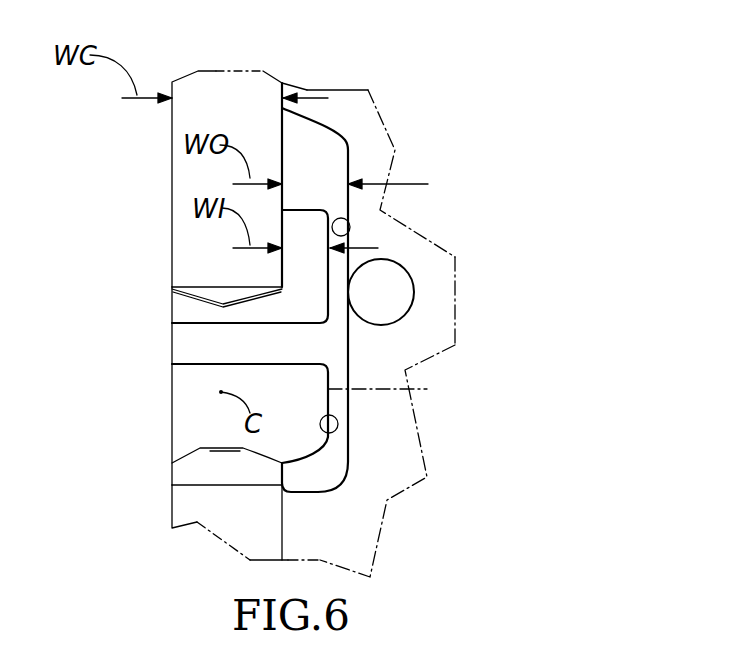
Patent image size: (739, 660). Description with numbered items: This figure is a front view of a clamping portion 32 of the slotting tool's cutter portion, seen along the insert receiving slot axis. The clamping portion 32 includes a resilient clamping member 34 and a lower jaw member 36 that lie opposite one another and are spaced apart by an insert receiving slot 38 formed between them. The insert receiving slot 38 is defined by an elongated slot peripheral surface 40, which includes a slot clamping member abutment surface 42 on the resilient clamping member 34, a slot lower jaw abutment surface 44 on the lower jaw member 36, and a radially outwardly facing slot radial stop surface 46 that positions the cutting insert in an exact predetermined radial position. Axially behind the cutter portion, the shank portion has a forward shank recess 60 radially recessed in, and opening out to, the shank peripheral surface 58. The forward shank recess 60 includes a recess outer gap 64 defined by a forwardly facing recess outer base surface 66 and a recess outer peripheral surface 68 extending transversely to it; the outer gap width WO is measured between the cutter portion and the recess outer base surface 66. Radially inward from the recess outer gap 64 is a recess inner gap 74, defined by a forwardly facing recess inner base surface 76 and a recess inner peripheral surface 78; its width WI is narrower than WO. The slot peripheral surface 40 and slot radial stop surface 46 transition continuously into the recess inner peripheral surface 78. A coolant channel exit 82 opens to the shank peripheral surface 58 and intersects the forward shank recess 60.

The clamping portion 32 is at (477, 67).
The resilient clamping member 34 is at (242, 111).
The lower jaw member 36 is at (247, 520).
The insert receiving slot 38 is at (147, 375).
The slot peripheral surface 40 is at (193, 403).
The slot clamping member abutment surface 42 is at (187, 297).
The slot lower jaw abutment surface 44 is at (200, 455).
The slot radial stop surface 46 is at (215, 346).
The shank peripheral surface 58 is at (430, 322).
The forward shank recess 60 is at (328, 158).
The recess outer gap 64 is at (305, 142).
The recess outer base surface 66 is at (348, 217).
The recess outer peripheral surface 68 is at (322, 182).
The recess inner gap 74 is at (295, 307).
The recess inner base surface 76 is at (328, 437).
The recess inner peripheral surface 78 is at (303, 432).
The coolant channel exit 82 is at (405, 270).